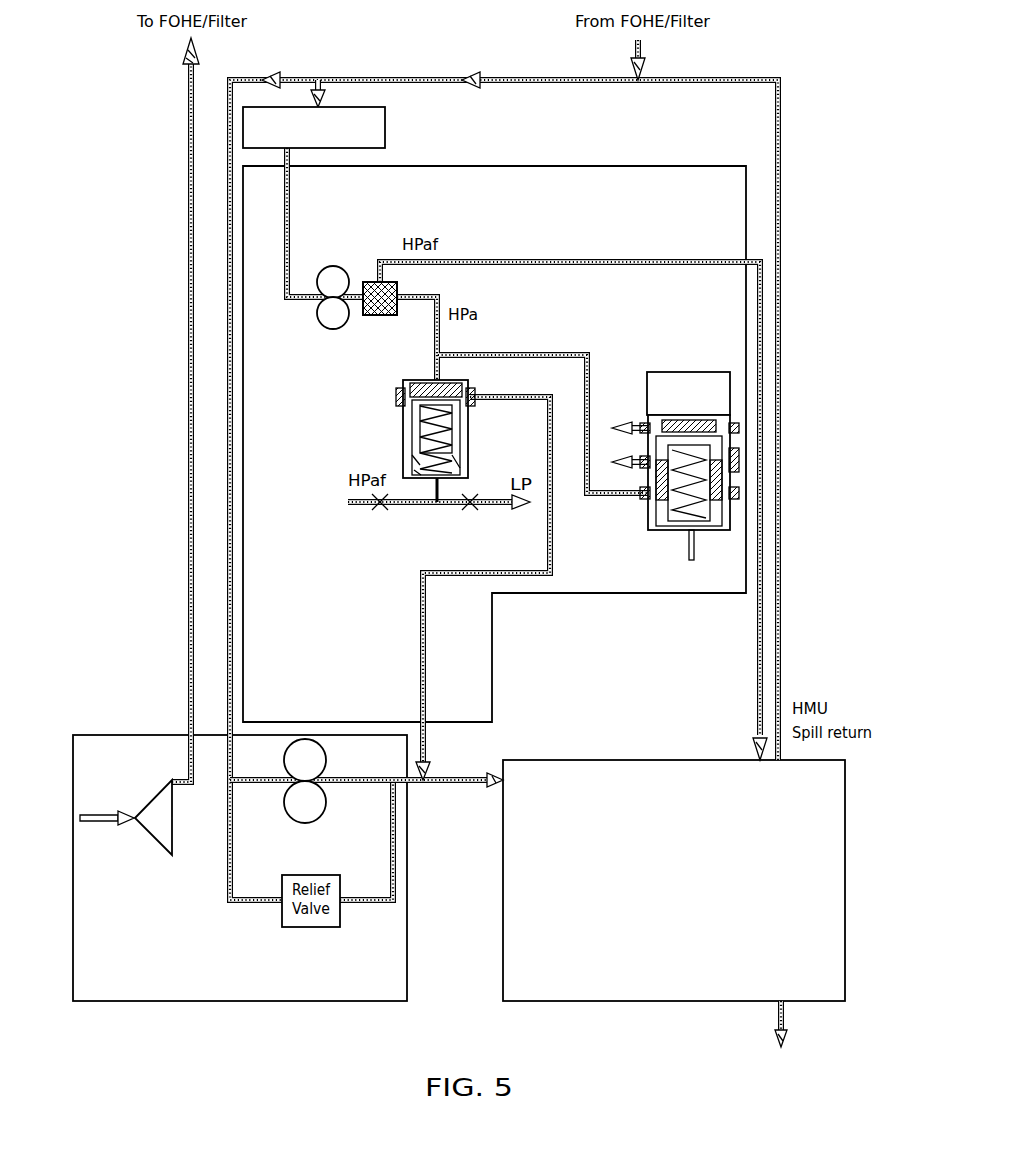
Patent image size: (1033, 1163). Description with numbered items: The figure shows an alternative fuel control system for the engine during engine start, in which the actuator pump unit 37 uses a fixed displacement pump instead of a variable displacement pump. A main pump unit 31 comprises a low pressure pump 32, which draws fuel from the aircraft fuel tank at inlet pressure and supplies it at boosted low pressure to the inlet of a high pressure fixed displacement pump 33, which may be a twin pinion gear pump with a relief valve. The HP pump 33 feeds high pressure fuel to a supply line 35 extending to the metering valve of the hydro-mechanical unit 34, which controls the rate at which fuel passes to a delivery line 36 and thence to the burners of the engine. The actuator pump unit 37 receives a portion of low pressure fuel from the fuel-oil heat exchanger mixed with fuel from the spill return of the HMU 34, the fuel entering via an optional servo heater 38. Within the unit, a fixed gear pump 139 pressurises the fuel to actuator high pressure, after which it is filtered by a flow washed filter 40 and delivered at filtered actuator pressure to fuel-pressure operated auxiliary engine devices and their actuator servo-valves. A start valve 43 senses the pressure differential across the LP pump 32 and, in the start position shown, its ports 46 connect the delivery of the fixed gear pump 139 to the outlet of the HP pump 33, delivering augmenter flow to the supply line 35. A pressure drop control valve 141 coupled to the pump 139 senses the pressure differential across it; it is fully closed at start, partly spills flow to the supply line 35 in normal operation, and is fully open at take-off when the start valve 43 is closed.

The main pump unit 31 is at (127, 736).
The low pressure (LP) pump 32 is at (172, 840).
The high pressure (HP) fixed displacement pump 33 is at (325, 815).
The hydro-mechanical unit (HMU) 34 is at (601, 753).
The supply line 35 is at (432, 778).
The delivery line 36 is at (772, 1015).
The actuator pump unit 37 is at (658, 167).
The servo heater 38 is at (386, 115).
The fixed gear pump 139 is at (333, 266).
The flow washed filter 40 is at (386, 315).
The pressure drop control valve (PDCV) 141 is at (403, 435).
The start valve 43 is at (698, 372).
The ports 46 is at (640, 470).